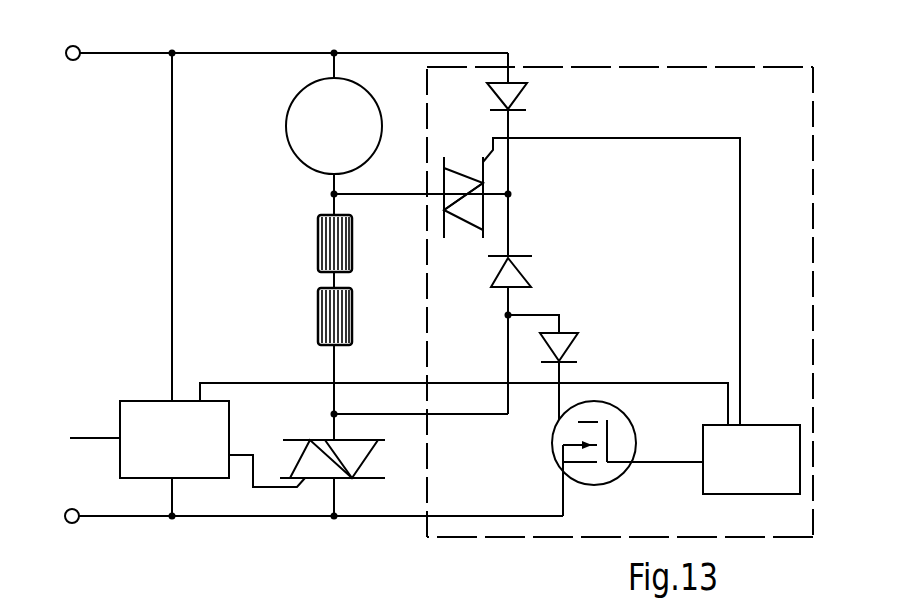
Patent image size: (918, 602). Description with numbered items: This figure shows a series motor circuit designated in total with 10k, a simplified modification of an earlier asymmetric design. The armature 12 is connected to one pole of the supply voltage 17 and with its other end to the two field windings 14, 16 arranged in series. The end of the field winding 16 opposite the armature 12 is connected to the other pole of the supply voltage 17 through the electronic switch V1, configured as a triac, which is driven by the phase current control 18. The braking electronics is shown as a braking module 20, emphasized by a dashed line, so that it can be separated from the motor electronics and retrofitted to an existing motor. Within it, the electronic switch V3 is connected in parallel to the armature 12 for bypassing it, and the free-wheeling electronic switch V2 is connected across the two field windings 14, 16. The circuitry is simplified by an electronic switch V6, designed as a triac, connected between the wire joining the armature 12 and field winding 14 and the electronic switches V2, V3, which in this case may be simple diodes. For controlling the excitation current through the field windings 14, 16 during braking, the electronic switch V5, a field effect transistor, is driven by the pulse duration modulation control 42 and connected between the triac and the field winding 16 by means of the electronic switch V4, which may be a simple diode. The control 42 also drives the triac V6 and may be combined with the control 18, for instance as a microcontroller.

The series motor 10k is at (106, 240).
The armature 12 is at (300, 120).
The field winding 14 is at (318, 232).
The field winding 16 is at (318, 307).
The supply voltage 17 is at (77, 59).
The phase current control 18 is at (141, 422).
The braking module 20 is at (720, 85).
The control 42 is at (757, 432).
The electronic switch V1 is at (353, 450).
The electronic switch V2 is at (513, 279).
The electronic switch V3 is at (515, 89).
The electronic switch V4 is at (563, 341).
The electronic switch V5 is at (609, 417).
The electronic switch V6 is at (462, 184).